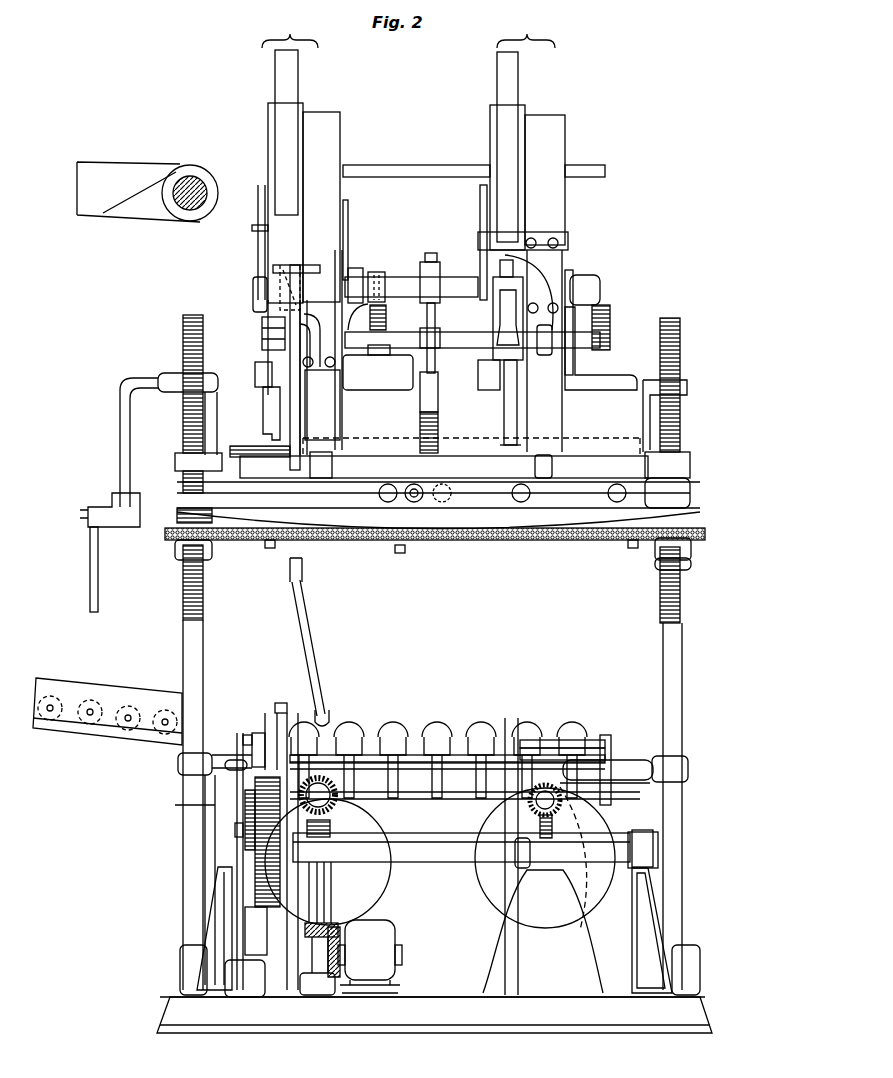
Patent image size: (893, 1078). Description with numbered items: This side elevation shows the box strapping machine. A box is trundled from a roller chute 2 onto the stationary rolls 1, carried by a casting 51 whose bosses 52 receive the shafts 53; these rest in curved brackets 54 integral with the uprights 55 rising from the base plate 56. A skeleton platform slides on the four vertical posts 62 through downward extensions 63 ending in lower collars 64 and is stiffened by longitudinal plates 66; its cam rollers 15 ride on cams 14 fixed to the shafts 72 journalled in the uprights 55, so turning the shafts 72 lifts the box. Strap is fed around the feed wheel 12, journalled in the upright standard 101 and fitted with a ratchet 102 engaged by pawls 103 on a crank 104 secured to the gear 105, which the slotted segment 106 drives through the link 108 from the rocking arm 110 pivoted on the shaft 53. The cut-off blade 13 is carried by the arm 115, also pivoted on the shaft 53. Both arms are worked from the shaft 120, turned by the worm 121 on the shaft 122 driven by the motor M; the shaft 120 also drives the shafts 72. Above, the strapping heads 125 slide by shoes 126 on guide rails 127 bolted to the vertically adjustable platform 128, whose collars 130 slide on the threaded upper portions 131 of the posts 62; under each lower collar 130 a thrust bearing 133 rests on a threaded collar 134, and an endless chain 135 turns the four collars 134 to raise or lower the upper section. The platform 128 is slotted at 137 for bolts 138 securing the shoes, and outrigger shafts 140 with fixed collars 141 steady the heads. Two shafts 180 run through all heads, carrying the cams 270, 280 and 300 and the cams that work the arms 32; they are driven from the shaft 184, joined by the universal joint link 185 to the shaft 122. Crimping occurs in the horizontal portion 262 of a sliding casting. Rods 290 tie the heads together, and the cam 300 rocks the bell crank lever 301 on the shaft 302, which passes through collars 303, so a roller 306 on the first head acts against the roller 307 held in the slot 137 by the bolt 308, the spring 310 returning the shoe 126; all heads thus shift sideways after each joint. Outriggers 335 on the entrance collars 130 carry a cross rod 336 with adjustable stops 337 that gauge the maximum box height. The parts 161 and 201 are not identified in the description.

The rolls 1 is at (438, 720).
The roller chute 2 is at (92, 710).
The strap feeding wheel 12 is at (510, 718).
The cut-off blade 13 is at (292, 713).
The cams 14 is at (360, 823).
The cam rollers 15 is at (323, 710).
The arms 32 is at (283, 290).
The casting 51 is at (372, 762).
The enlarged bosses 52 is at (545, 742).
The shafts 53 is at (553, 745).
The curved brackets 54 is at (603, 760).
The uprights 55 is at (553, 962).
The base plate 56 is at (415, 1005).
The vertical posts 62 is at (190, 652).
The downward extensions 63 is at (222, 812).
The lower collars 64 is at (180, 965).
The longitudinal plates 66 is at (635, 760).
The shafts 72 is at (320, 770).
The upright standard 101 is at (212, 950).
The ratchet 102 is at (268, 880).
The pawls 103 is at (238, 763).
The crank 104 is at (258, 790).
The gear 105 is at (250, 848).
The segment 106 is at (250, 910).
The link 108 is at (235, 968).
The rocking arm 110 is at (252, 735).
The arm 115 is at (276, 703).
The shaft 120 is at (420, 837).
The worm 121 is at (330, 843).
The shaft 122 is at (317, 907).
The strapping heads 125 is at (415, 156).
The shoes 126 is at (345, 450).
The guide rails 127 is at (365, 538).
The top frame structure 128 is at (585, 540).
The collars 130 is at (168, 373).
The threaded upper portions 131 is at (190, 320).
The thrust bearing 133 is at (688, 522).
The threaded collar 134 is at (183, 545).
The endless chain 135 is at (690, 545).
The slot 137 is at (515, 538).
The bolts 138 is at (270, 545).
The outrigger shafts 140 is at (185, 478).
The collars 141 is at (318, 452).
The foot 161 is at (270, 430).
The shafts 180 is at (192, 178).
The shaft 184 is at (293, 400).
The universal joint link 185 is at (308, 625).
The plunger 201 is at (284, 80).
The horizontal portion 262 is at (362, 390).
The cam 270 is at (96, 176).
The second cam 280 is at (150, 216).
The rods 290 is at (388, 168).
The cam 300 is at (443, 307).
The bell crank lever 301 is at (430, 313).
The shaft 302 is at (458, 348).
The collars 303 is at (346, 265).
The roller 306 is at (468, 530).
The roller 307 is at (430, 545).
The bolt 308 is at (408, 505).
The spring 310 is at (252, 442).
The outriggers 335 is at (125, 425).
The cross rod 336 is at (122, 528).
The stops 337 is at (90, 588).
The motor M is at (380, 957).